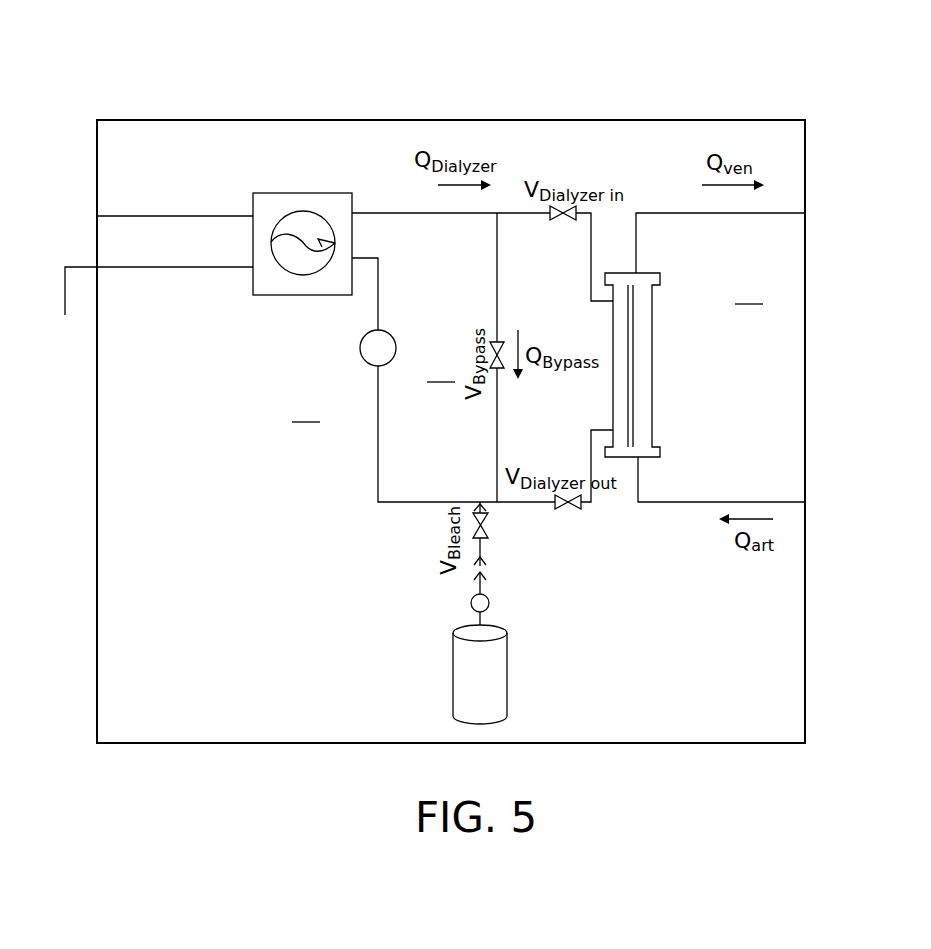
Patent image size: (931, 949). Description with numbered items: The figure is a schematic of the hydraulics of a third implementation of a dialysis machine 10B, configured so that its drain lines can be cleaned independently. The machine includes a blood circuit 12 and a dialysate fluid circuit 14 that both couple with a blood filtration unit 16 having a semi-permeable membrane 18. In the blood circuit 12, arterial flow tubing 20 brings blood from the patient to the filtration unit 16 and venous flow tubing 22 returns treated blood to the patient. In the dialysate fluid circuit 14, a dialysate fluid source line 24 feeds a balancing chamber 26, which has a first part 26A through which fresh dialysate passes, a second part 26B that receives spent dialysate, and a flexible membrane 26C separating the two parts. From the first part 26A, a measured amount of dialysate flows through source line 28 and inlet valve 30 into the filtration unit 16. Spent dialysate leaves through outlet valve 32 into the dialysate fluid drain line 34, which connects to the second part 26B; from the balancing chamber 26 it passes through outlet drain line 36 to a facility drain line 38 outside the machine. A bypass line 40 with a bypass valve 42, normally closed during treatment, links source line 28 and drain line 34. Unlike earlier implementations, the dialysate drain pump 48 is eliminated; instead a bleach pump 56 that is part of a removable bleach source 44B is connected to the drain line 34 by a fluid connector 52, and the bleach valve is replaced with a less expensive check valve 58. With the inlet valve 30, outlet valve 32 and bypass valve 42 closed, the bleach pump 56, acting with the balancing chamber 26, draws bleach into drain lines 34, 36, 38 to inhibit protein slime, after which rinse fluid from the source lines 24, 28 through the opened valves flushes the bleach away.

The dialysis machine 10B is at (549, 88).
The blood circuit 12 is at (749, 292).
The dialysate fluid circuit 14 is at (306, 410).
The blood filtration unit 16 is at (670, 396).
The semi-permeable membrane 18 is at (633, 318).
The arterial flow tubing 20 is at (730, 500).
The venous flow tubing 22 is at (763, 213).
The dialysate fluid source line 24 is at (200, 216).
The balancing chamber 26 is at (313, 192).
The first part 26A is at (322, 228).
The second part 26B is at (286, 253).
The flexible membrane 26C is at (322, 257).
The source line 28 is at (467, 215).
The inlet valve 30 is at (572, 222).
The outlet valve 32 is at (563, 512).
The dialysate fluid drain line 34 is at (376, 470).
The outlet drain line 36 is at (128, 269).
The facility drain line 38 is at (62, 290).
The bypass line 40 is at (498, 312).
The bypass valve 42 is at (465, 362).
The bleach source 44B is at (510, 707).
The dialysate drain pump 48 is at (397, 350).
The fluid connector 52 is at (487, 563).
The bleach pump 56 is at (491, 602).
The check valve 58 is at (487, 495).